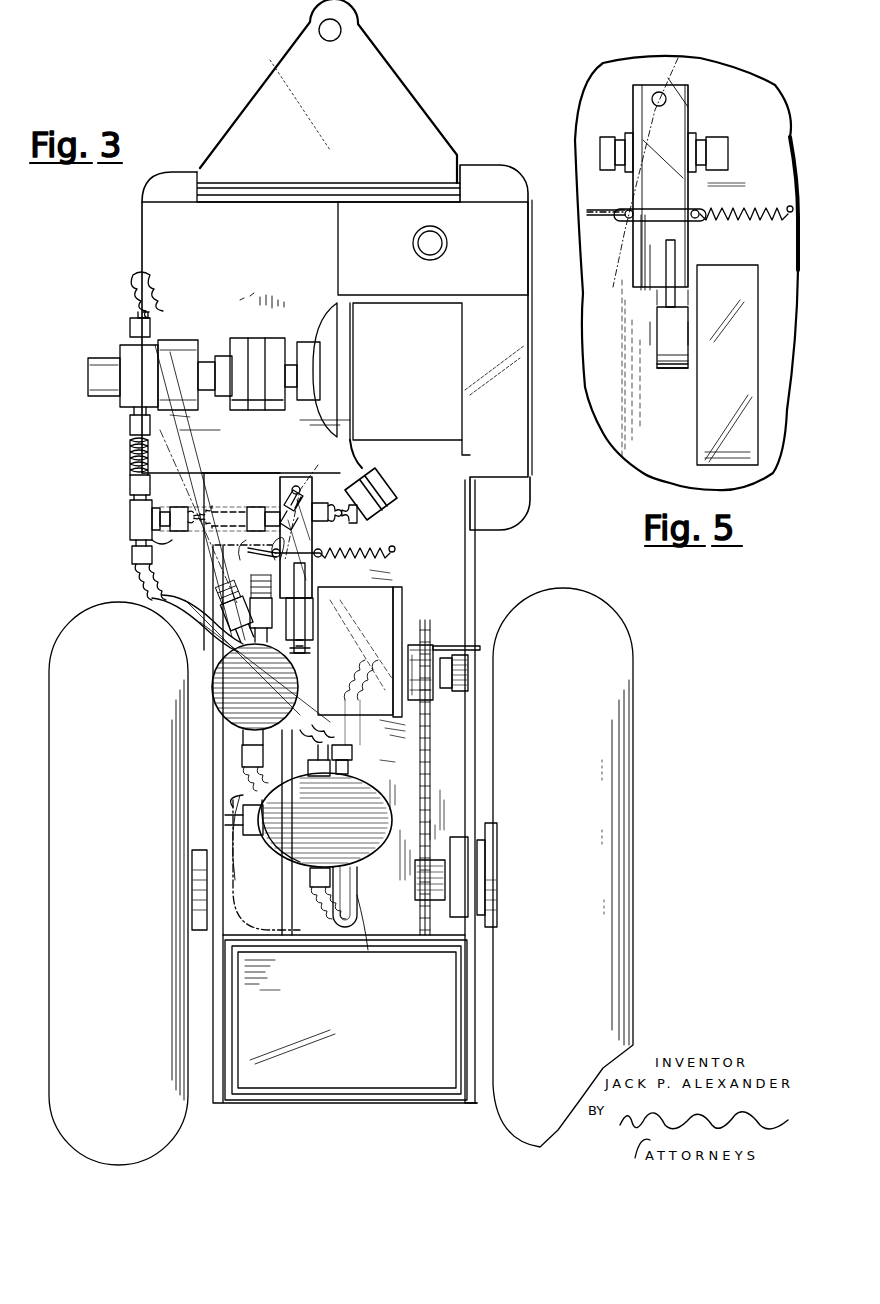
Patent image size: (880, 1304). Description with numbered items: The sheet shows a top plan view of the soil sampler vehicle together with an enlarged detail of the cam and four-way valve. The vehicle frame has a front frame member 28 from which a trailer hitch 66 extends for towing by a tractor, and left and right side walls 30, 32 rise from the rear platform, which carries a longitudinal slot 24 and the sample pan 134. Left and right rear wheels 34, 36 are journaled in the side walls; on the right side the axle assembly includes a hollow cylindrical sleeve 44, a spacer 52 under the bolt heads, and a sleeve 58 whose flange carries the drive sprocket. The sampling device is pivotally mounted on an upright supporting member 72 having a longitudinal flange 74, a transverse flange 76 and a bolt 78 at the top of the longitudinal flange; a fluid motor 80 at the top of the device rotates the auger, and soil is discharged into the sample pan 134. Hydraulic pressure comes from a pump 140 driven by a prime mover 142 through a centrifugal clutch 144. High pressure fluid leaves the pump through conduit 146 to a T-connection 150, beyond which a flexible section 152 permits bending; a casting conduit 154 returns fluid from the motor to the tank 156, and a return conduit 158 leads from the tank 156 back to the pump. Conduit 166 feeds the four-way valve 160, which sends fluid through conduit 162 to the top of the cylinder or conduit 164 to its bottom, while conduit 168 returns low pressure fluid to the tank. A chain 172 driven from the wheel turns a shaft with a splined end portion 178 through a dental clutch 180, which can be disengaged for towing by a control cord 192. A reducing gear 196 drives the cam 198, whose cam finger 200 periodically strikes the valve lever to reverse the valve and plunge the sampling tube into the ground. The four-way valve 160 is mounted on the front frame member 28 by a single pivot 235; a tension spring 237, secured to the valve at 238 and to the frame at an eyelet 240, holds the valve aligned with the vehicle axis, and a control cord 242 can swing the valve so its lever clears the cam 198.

In FIG. 3, the longitudinal slot 24 is at (366, 938).
In FIG. 3, the front frame member 28 is at (275, 262).
In FIG. 3, the left side wall 30 is at (222, 1103).
In FIG. 3, the right side wall 32 is at (472, 1103).
In FIG. 3, the left rear wheel 34 is at (122, 840).
In FIG. 3, the right rear wheel 36 is at (556, 825).
In FIG. 3, the hollow cylindrical sleeve 44 is at (496, 848).
In FIG. 3, the spacer 52 is at (458, 840).
In FIG. 3, the sleeve 58 is at (422, 897).
In FIG. 3, the trailer hitch 66 is at (378, 82).
In FIG. 3, the upright supporting member 72 is at (288, 882).
In FIG. 3, the longitudinal flange 74 is at (278, 766).
In FIG. 3, the transverse flange 76 is at (246, 838).
In FIG. 3, the bolt 78 is at (273, 842).
In FIG. 3, the fluid motor 80 is at (349, 810).
In FIG. 3, the sample pan 134 is at (368, 1021).
In FIG. 3, the pump 140 is at (128, 398).
In FIG. 3, the prime mover 142 is at (432, 362).
In FIG. 3, the centrifugal clutch 144 is at (280, 343).
In FIG. 3, the conduit 146 is at (130, 458).
In FIG. 3, the T-connection 150 is at (130, 524).
In FIG. 3, the flexible section 152 is at (132, 572).
In FIG. 3, the casting conduit 154 is at (263, 812).
In FIG. 3, the tank 156 is at (262, 700).
In FIG. 3, the return conduit 158 is at (162, 292).
In FIG. 3, the four-way valve 160 is at (290, 486).
In FIG. 5, the four-way valve 160 is at (633, 101).
In FIG. 3, the conduit 162 is at (306, 486).
In FIG. 3, the conduit 164 is at (372, 740).
In FIG. 3, the conduit 166 is at (238, 505).
In FIG. 3, the conduit 168 is at (250, 592).
In FIG. 3, the chain 172 is at (420, 778).
In FIG. 3, the splined end portion 178 is at (462, 690).
In FIG. 3, the dental clutch 180 is at (432, 688).
In FIG. 3, the control cord 192 is at (478, 646).
In FIG. 3, the reducing gear 196 is at (402, 612).
In FIG. 5, the reducing gear 196 is at (742, 362).
In FIG. 3, the cam 198 is at (300, 652).
In FIG. 5, the cam 198 is at (674, 368).
In FIG. 3, the cam finger 200 is at (320, 628).
In FIG. 5, the cam finger 200 is at (660, 304).
In FIG. 3, the pivot 235 is at (304, 478).
In FIG. 5, the pivot 235 is at (670, 75).
In FIG. 3, the tension spring 237 is at (368, 556).
In FIG. 5, the tension spring 237 is at (742, 215).
In FIG. 3, the spring attachment point on valve 238 is at (322, 552).
In FIG. 5, the spring attachment point on valve 238 is at (700, 212).
In FIG. 3, the eyelet 240 is at (395, 549).
In FIG. 5, the eyelet 240 is at (790, 206).
In FIG. 3, the control cord 242 is at (262, 545).
In FIG. 5, the control cord 242 is at (592, 214).